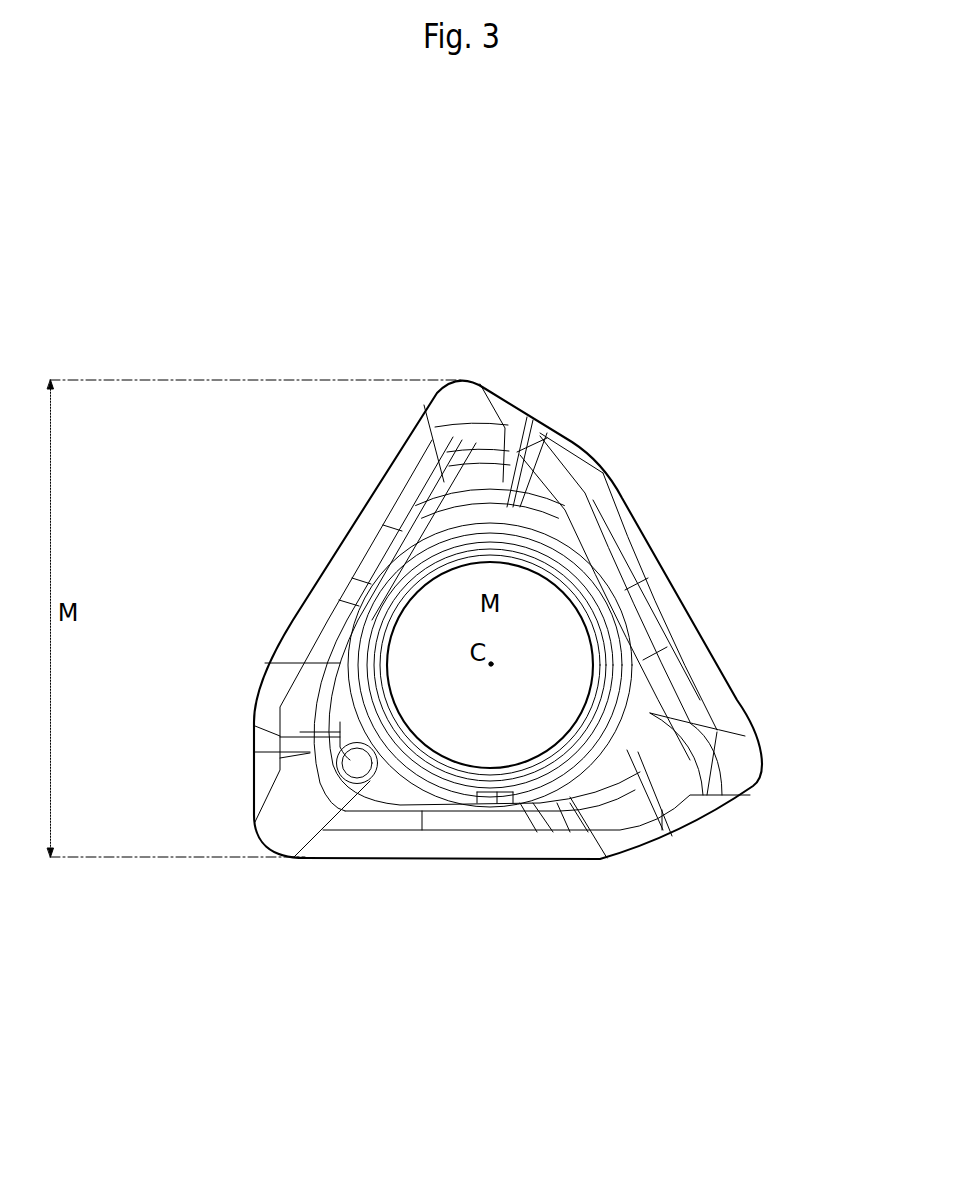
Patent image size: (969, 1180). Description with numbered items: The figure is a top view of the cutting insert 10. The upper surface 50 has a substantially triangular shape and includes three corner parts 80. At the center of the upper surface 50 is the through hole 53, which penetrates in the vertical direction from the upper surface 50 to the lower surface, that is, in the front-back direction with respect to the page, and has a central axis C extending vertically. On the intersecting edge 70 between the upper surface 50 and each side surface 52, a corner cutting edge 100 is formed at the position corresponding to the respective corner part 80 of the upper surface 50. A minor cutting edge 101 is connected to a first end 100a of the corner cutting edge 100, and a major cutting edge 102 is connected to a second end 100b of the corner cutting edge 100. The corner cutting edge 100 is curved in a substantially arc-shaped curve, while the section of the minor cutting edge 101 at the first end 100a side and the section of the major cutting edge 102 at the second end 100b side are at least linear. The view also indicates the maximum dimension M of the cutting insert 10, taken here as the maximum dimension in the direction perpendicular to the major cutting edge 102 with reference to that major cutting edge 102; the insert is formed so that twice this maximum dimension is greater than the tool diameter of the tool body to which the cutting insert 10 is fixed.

The cutting insert 10 is at (655, 380).
The upper surface 50 is at (612, 505).
The side surface 52 is at (515, 385).
The through hole 53 is at (553, 628).
The intersecting edge 70 is at (433, 383).
The corner part 80 is at (468, 377).
The corner cutting edge 100 is at (458, 377).
The first end 100a is at (505, 388).
The second end 100b is at (420, 400).
The minor cutting edge 101 is at (525, 398).
The major cutting edge 102 is at (402, 432).